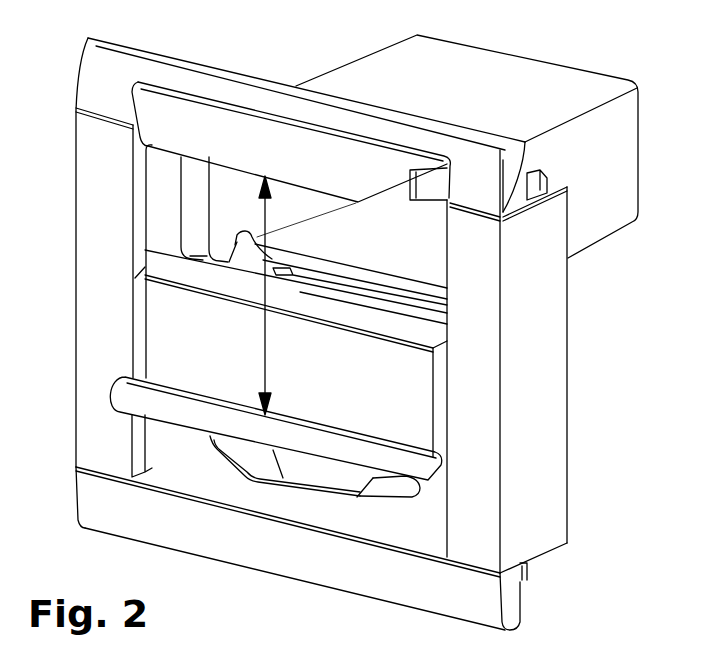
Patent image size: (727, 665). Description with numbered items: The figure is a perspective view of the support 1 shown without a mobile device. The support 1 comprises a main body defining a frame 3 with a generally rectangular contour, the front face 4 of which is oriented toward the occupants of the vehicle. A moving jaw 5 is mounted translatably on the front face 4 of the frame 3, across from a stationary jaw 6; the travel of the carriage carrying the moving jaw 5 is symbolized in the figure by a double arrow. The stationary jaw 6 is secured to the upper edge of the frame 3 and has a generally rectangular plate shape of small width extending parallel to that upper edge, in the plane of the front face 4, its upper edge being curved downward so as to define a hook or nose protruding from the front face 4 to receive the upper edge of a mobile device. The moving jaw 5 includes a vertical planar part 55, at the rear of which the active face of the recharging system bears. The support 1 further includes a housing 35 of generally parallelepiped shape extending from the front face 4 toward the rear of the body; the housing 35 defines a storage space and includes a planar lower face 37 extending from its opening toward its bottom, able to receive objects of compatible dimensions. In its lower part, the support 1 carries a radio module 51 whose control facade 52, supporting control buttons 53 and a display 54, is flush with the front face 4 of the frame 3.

The support 1 is at (590, 382).
The frame 3 is at (102, 348).
The front face 4 is at (141, 262).
The moving jaw 5 is at (168, 415).
The stationary jaw 6 is at (215, 120).
The housing 35 is at (595, 145).
The planar lower face 37 is at (351, 278).
The radio module 51 is at (357, 512).
The control facade 52 is at (205, 467).
The control buttons 53 is at (403, 495).
The display 54 is at (305, 478).
The vertical planar part 55 is at (374, 399).